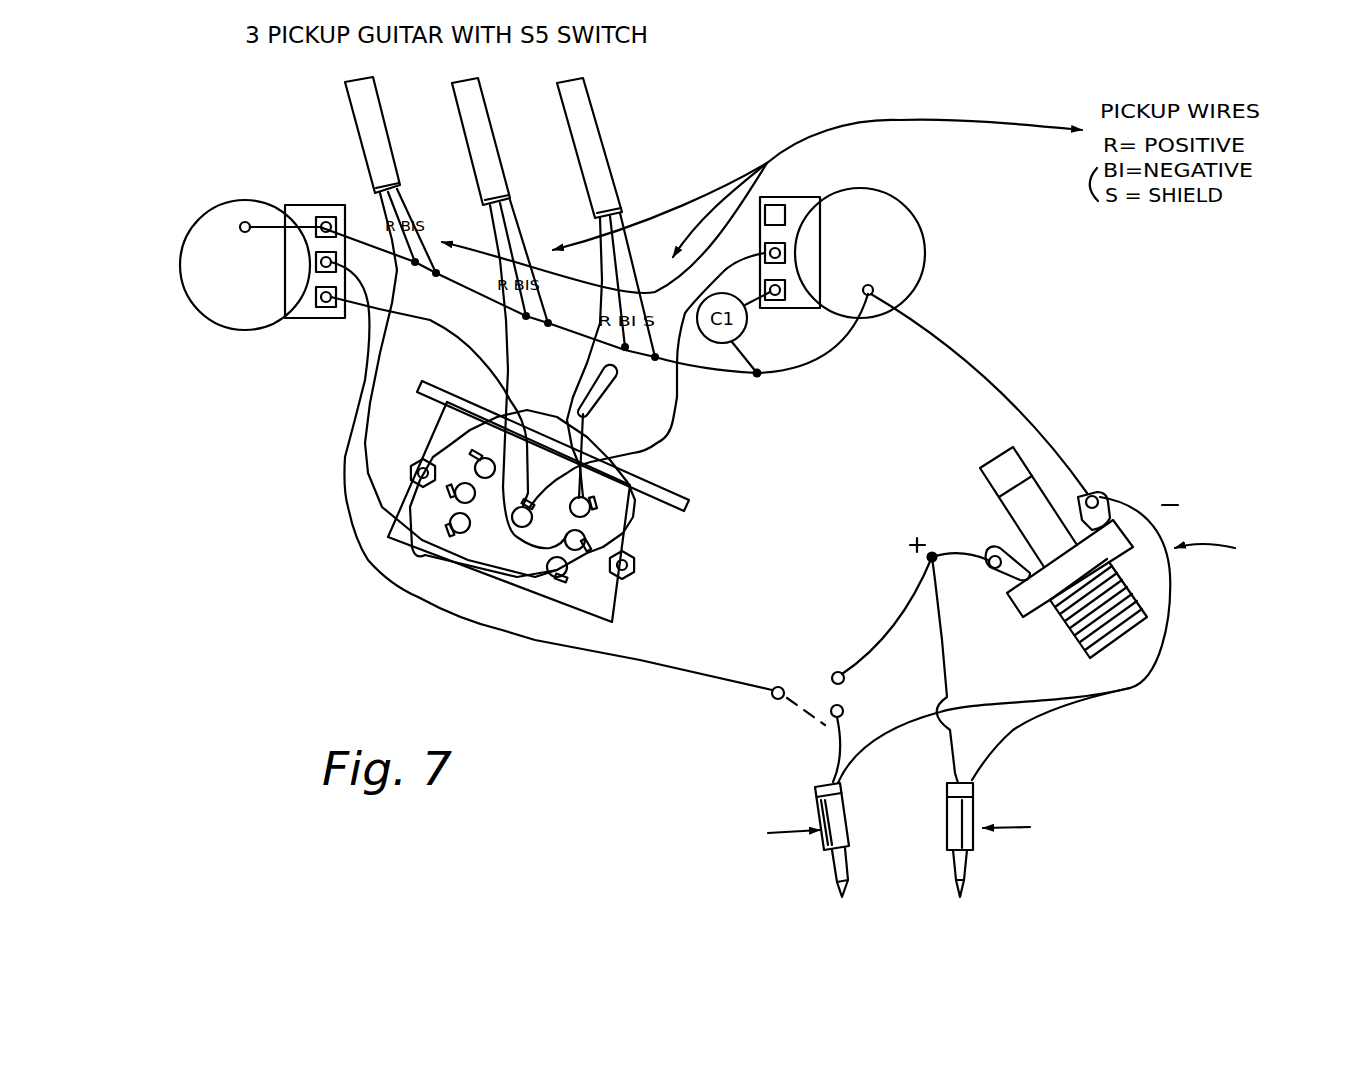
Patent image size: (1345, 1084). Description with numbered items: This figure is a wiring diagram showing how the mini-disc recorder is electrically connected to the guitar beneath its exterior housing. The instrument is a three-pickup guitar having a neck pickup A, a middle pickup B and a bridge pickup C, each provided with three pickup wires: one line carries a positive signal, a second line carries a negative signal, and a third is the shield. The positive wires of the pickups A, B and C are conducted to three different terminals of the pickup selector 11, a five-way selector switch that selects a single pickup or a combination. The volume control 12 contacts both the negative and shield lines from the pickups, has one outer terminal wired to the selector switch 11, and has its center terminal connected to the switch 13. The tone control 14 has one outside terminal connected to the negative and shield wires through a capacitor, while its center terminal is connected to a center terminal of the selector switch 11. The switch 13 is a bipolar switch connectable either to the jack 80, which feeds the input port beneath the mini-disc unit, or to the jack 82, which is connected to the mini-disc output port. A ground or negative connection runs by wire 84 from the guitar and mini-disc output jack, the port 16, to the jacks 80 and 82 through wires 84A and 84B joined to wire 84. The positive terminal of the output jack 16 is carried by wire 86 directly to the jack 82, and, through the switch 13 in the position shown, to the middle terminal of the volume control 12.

The pickup selector 11 is at (694, 477).
The volume control 12 is at (221, 323).
The switch 13 is at (782, 735).
The tone control 14 is at (915, 208).
The port 16 is at (968, 462).
The jack 80 is at (846, 823).
The jack 82 is at (947, 812).
The wire 84 is at (1133, 690).
The wire 84A is at (904, 728).
The wire 84B is at (1023, 731).
The wire 86 is at (950, 555).
The neck pickup A is at (636, 94).
The middle pickup B is at (500, 72).
The bridge pickup C is at (328, 127).